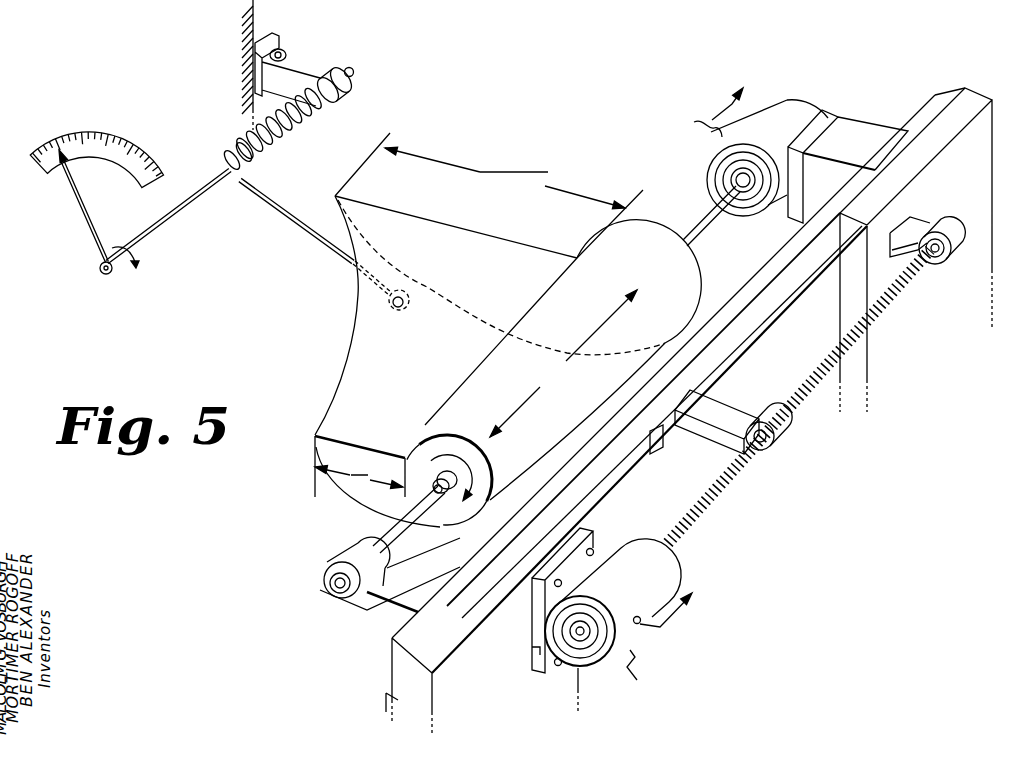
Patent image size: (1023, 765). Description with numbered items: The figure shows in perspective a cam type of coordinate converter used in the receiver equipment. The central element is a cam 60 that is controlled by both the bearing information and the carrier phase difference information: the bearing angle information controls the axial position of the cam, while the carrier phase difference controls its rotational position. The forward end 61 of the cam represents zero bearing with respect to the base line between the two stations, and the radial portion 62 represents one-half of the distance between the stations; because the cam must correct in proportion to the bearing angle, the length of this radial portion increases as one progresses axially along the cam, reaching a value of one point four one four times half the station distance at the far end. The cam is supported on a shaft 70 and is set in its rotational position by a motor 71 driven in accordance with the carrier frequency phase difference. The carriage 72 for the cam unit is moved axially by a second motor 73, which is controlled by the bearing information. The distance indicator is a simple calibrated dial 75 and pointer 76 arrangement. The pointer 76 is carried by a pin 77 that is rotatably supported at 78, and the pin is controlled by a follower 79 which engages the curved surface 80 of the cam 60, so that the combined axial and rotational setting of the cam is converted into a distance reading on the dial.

The cam 60 is at (347, 342).
The forward end of the cam 61 is at (470, 503).
The radial portion 62 is at (333, 434).
The shaft 70 is at (706, 225).
The motor 71 is at (718, 156).
The carriage 72 is at (465, 579).
The motor 73 is at (634, 627).
The calibrated dial 75 is at (121, 138).
The pointer 76 is at (76, 202).
The pin 77 is at (165, 224).
The rotatable support 78 is at (295, 78).
The follower 79 is at (388, 302).
The curved surface 80 is at (350, 502).